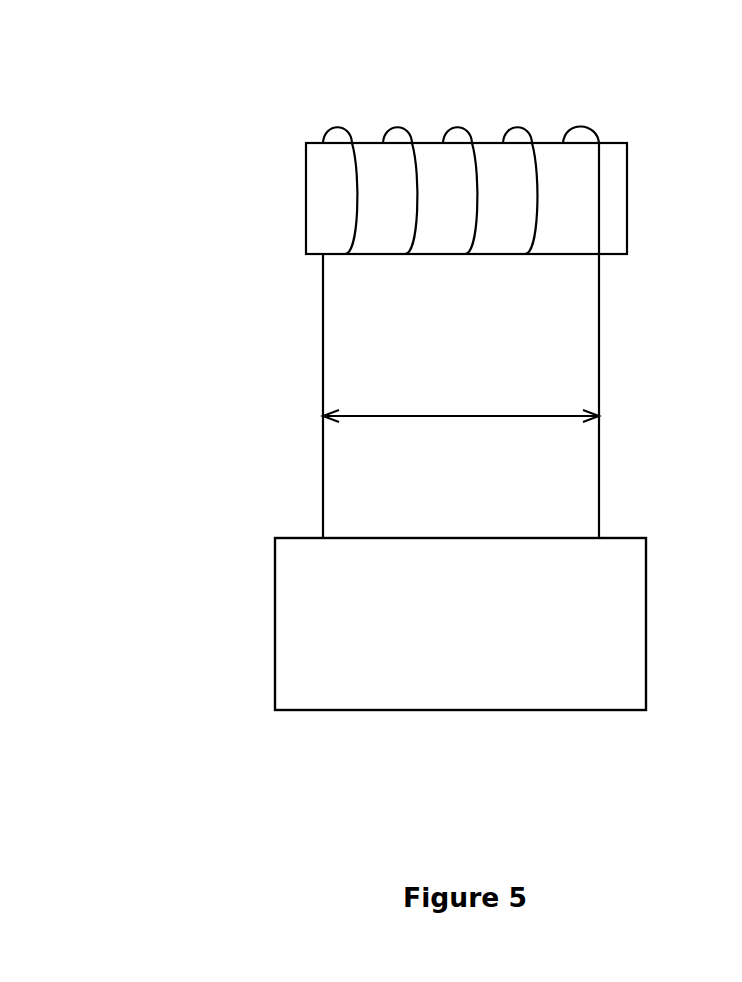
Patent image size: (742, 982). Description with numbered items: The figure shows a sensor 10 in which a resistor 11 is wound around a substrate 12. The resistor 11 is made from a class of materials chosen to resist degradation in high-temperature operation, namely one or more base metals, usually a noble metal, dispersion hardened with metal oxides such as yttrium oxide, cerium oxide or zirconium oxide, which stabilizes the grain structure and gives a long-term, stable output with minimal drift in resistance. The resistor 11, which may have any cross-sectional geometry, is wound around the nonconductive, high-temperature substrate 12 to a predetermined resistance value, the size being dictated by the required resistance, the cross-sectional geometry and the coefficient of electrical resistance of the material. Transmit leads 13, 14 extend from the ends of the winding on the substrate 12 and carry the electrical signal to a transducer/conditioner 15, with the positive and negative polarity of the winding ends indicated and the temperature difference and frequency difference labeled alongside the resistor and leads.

The sensor 10 is at (57, 97).
The resistor 11 is at (576, 133).
The substrate 12 is at (627, 185).
The transmit lead 13 is at (323, 360).
The transmit lead 14 is at (599, 367).
The transducer/conditioner 15 is at (646, 598).